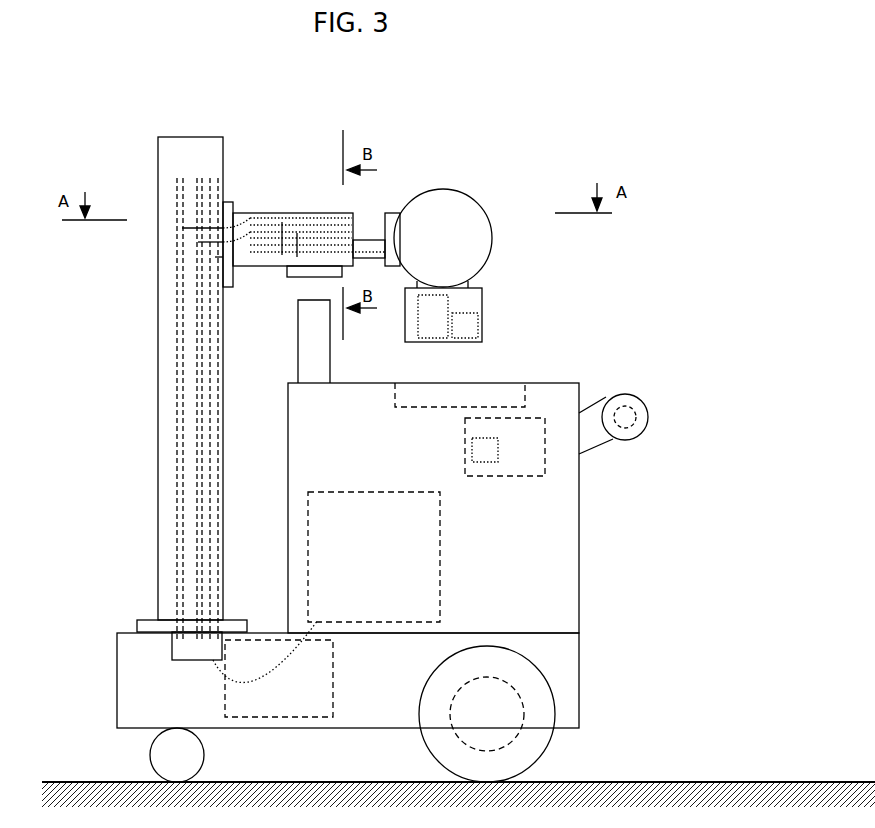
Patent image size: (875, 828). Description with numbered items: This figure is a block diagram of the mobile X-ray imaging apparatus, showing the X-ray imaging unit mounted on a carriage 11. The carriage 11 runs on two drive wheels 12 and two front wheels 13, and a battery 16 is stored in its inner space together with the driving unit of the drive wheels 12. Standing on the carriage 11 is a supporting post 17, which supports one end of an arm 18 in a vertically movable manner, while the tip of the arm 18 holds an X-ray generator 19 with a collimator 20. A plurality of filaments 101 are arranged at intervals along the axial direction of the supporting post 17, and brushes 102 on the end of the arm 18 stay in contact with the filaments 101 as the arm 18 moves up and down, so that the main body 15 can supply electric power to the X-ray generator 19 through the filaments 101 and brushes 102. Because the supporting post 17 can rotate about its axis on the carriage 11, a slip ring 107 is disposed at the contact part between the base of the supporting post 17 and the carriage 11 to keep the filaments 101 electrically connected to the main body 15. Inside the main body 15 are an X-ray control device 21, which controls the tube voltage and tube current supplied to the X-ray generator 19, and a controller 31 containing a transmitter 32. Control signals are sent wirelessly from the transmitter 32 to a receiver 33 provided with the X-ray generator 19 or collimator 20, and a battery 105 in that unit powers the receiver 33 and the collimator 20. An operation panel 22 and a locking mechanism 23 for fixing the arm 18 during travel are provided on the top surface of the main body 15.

The carriage 11 is at (392, 672).
The drive wheels 12 is at (538, 714).
The front wheels 13 is at (127, 753).
The main body 15 is at (482, 508).
The battery 16 is at (290, 703).
The supporting post 17 is at (143, 384).
The arm 18 is at (311, 205).
The X-ray generator 19 is at (475, 216).
The collimator 20 is at (488, 296).
The X-ray control device 21 is at (337, 549).
The operation panel 22 is at (498, 368).
The locking mechanism 23 is at (292, 341).
The controller 31 is at (566, 445).
The transmitter 32 is at (493, 408).
The receiver 33 is at (498, 318).
The filaments 101 is at (162, 410).
The brushes 102 is at (166, 245).
The battery 105 is at (401, 331).
The slip ring 107 is at (186, 641).